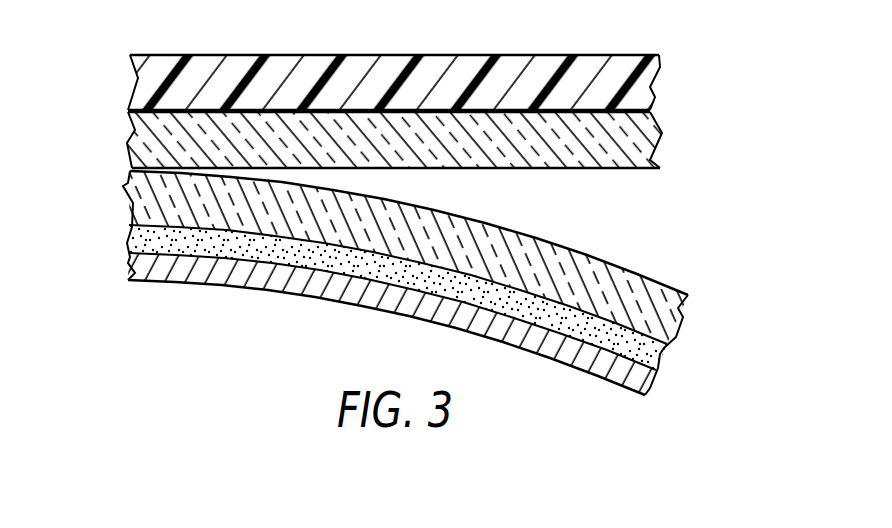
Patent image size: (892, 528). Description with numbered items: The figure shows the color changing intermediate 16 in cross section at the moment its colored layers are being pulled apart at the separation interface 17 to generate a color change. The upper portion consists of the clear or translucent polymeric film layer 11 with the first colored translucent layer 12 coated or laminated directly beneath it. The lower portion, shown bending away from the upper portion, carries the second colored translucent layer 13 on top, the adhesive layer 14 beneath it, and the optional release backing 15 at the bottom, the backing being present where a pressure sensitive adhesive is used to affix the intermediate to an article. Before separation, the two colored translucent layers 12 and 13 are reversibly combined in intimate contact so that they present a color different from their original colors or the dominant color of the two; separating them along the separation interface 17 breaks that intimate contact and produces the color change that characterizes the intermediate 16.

The clear or translucent polymeric film layer 11 is at (157, 88).
The colored translucent layer 12 is at (147, 143).
The colored translucent layer 13 is at (669, 314).
The adhesive layer 14 is at (660, 362).
The release backing 15 is at (233, 275).
The intermediate 16 is at (423, 100).
The separation interface 17 is at (473, 304).